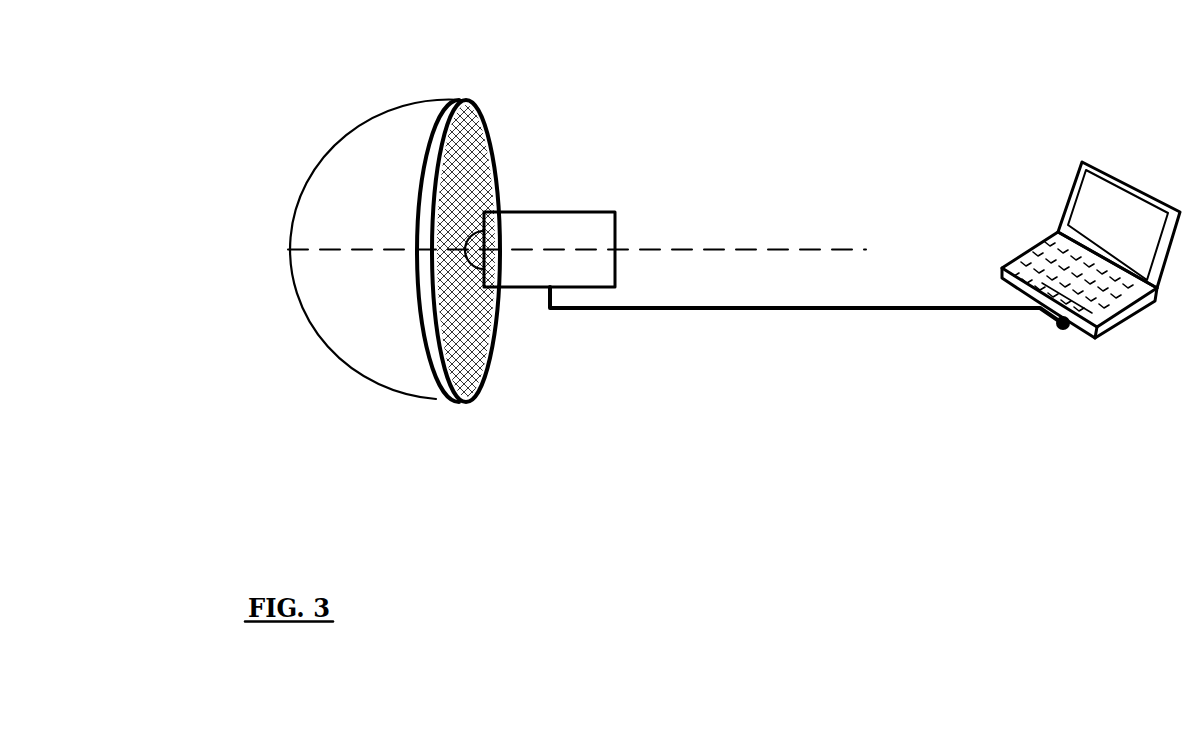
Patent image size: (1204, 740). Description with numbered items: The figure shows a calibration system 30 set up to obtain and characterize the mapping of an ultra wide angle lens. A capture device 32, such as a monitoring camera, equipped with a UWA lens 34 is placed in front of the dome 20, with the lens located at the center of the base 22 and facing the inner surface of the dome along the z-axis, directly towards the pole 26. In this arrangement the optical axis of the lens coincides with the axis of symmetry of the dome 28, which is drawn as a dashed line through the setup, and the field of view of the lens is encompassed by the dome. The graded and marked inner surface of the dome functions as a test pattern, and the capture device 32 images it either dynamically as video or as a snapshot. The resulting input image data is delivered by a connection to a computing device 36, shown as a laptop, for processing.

The dome 20 is at (325, 168).
The base 22 is at (445, 375).
The pole 26 is at (441, 268).
The axis of symmetry of the dome 28 is at (710, 249).
The calibration system 30 is at (810, 349).
The capture device 32 is at (549, 235).
The UWA lens 34 is at (485, 268).
The computing device 36 is at (1082, 162).